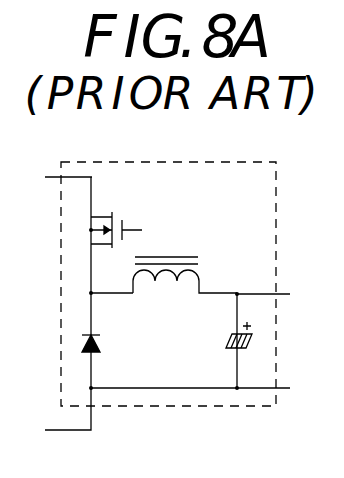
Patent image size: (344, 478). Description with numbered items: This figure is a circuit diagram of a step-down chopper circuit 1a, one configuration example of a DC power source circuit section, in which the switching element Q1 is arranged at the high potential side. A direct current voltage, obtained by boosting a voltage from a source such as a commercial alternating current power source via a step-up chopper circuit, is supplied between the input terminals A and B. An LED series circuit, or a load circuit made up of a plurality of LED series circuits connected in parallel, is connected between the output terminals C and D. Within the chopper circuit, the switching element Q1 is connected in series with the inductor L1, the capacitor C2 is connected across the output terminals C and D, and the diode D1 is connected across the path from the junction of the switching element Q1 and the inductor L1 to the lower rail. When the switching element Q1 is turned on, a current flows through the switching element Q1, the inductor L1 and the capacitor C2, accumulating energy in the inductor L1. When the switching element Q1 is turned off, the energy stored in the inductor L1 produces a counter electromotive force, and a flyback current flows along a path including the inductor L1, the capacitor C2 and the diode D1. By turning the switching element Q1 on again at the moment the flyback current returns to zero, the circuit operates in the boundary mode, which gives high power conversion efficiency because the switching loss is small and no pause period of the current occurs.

The step-down chopper circuit 1a is at (180, 162).
The switching element Q1 is at (123, 224).
The inductor L1 is at (185, 285).
The capacitor C2 is at (222, 341).
The diode D1 is at (108, 346).
The input terminal A is at (59, 179).
The input terminal B is at (59, 415).
The output terminal C is at (273, 293).
The output terminal D is at (274, 389).